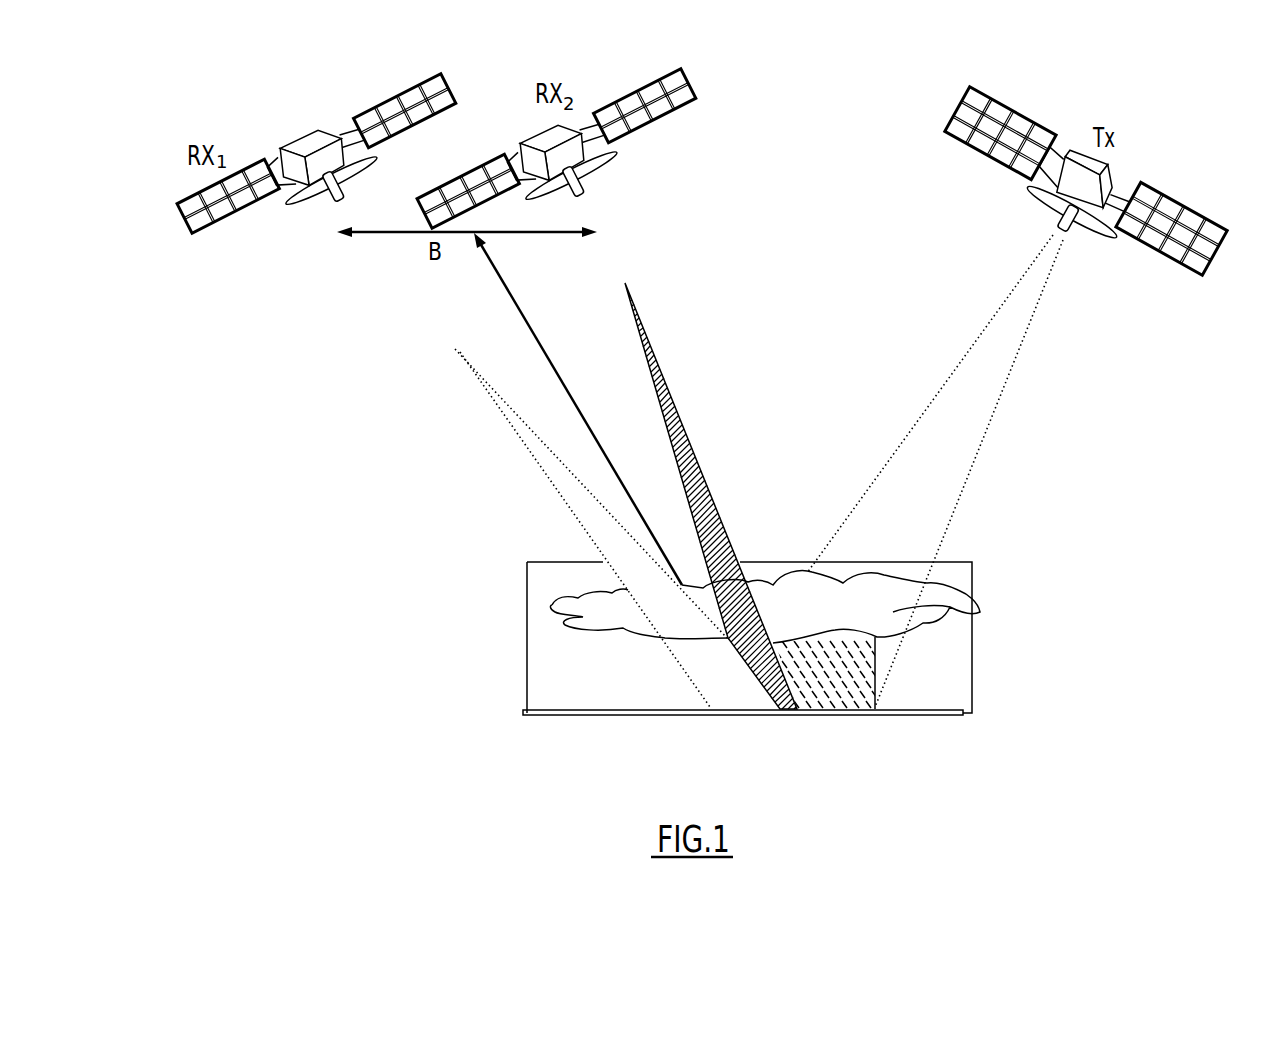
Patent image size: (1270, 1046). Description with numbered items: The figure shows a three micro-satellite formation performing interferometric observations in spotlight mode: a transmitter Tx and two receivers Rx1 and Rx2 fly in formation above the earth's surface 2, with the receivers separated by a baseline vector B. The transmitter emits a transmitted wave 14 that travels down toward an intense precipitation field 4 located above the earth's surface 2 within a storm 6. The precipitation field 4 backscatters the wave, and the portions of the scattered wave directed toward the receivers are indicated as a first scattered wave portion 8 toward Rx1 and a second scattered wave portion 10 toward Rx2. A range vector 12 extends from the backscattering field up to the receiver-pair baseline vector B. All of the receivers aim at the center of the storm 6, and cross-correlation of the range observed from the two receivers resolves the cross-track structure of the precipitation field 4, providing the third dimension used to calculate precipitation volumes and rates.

The earth's surface 2 is at (763, 740).
The precipitation field 4 is at (865, 668).
The storm 6 is at (612, 600).
The scattered wave portion toward first receiver 8 is at (505, 445).
The scattered wave portion toward second receiver 10 is at (697, 396).
The range vector 12 is at (578, 372).
The transmitted wave 14 is at (878, 412).